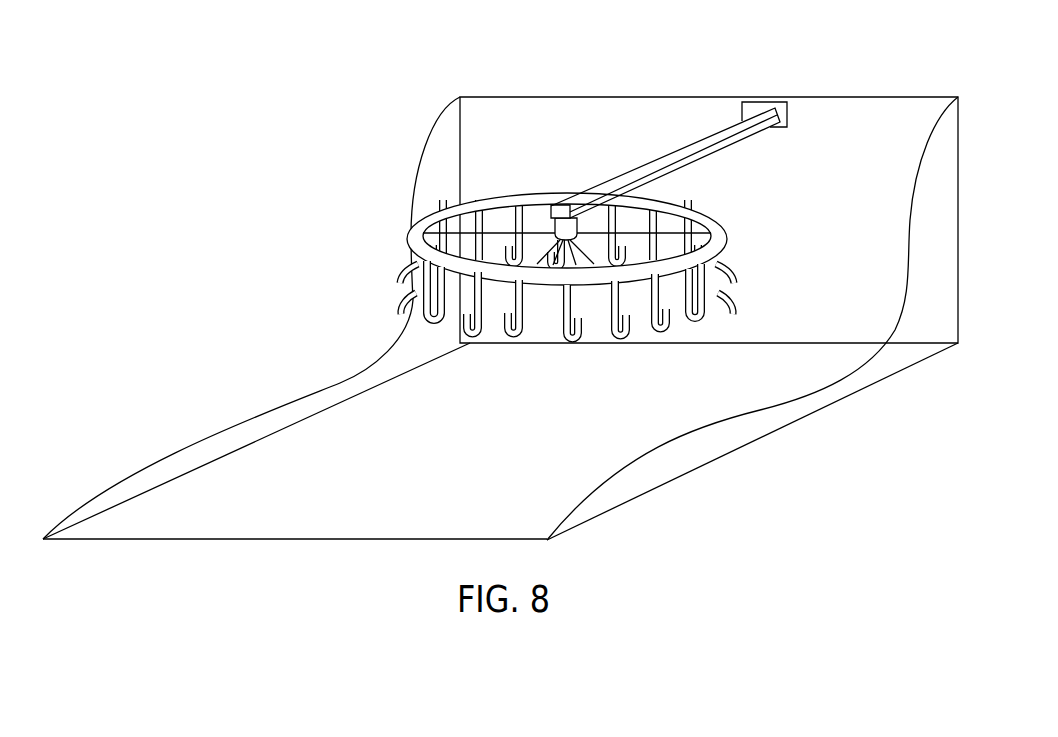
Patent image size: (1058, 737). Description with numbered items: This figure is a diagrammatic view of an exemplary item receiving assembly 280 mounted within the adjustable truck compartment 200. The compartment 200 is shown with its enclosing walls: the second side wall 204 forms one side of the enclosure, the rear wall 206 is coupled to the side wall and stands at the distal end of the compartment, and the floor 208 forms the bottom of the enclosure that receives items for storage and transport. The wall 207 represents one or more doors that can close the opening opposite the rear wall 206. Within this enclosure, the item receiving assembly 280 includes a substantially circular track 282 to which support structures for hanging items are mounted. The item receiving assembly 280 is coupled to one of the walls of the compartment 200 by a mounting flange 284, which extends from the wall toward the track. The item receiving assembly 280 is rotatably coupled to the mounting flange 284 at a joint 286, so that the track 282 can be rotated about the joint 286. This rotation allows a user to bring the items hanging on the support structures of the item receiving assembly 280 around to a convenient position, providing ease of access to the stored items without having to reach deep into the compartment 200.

The adjustable truck compartment 200 is at (500, 313).
The second side wall 204 is at (747, 444).
The rear wall 206 is at (852, 97).
The wall 207 is at (192, 540).
The floor 208 is at (156, 484).
The item receiving assembly 280 is at (565, 202).
The substantially circular track 282 is at (412, 220).
The mounting flange 284 is at (703, 138).
The joint 286 is at (555, 225).